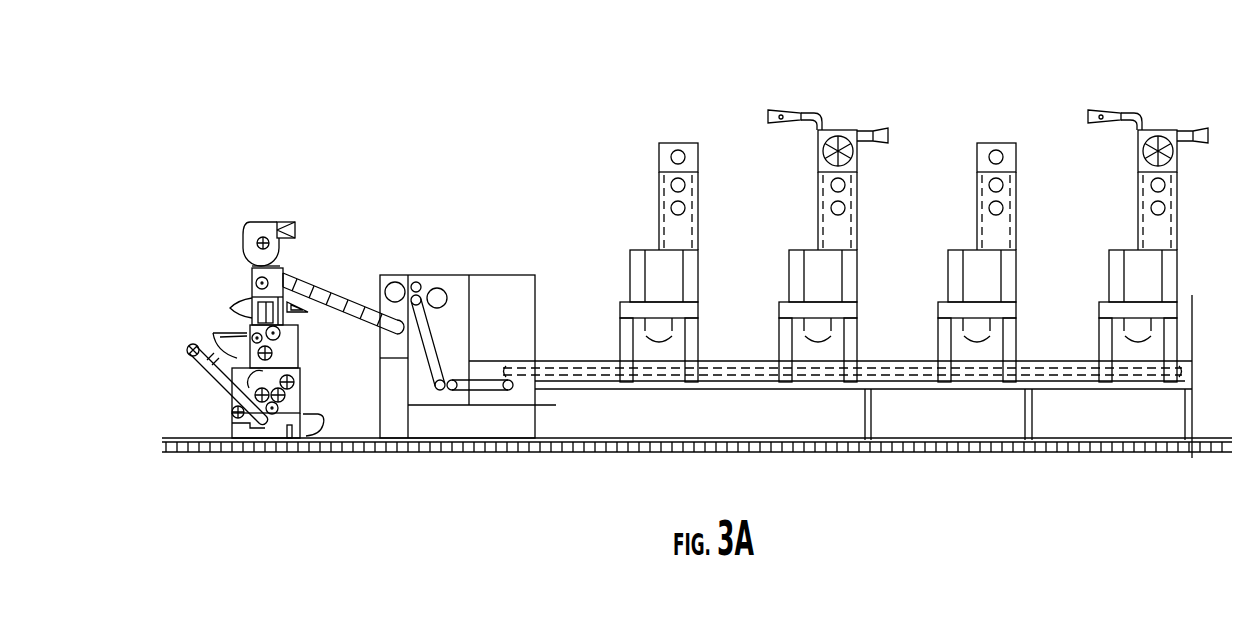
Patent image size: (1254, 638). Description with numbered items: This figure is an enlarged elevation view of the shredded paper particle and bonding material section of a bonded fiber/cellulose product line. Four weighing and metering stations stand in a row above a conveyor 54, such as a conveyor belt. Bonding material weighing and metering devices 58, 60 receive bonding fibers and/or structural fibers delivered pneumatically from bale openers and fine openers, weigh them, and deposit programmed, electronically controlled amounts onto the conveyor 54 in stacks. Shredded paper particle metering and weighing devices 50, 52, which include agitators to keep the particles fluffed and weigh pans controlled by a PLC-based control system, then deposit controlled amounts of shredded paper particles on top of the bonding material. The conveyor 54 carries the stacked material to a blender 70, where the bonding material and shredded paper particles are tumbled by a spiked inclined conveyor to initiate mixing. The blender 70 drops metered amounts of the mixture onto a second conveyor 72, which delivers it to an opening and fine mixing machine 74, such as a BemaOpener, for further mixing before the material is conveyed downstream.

The opening and fine mixing machine 74 is at (273, 205).
The second conveyor 72 is at (350, 276).
The blender 70 is at (456, 250).
The conveyor 54 is at (689, 425).
The shredded paper particle metering and weighing device 52 is at (678, 128).
The bonding material weighing and metering device 60 is at (852, 113).
The shredded paper particle metering and weighing device 50 is at (993, 133).
The bonding material weighing and metering device 58 is at (1159, 113).